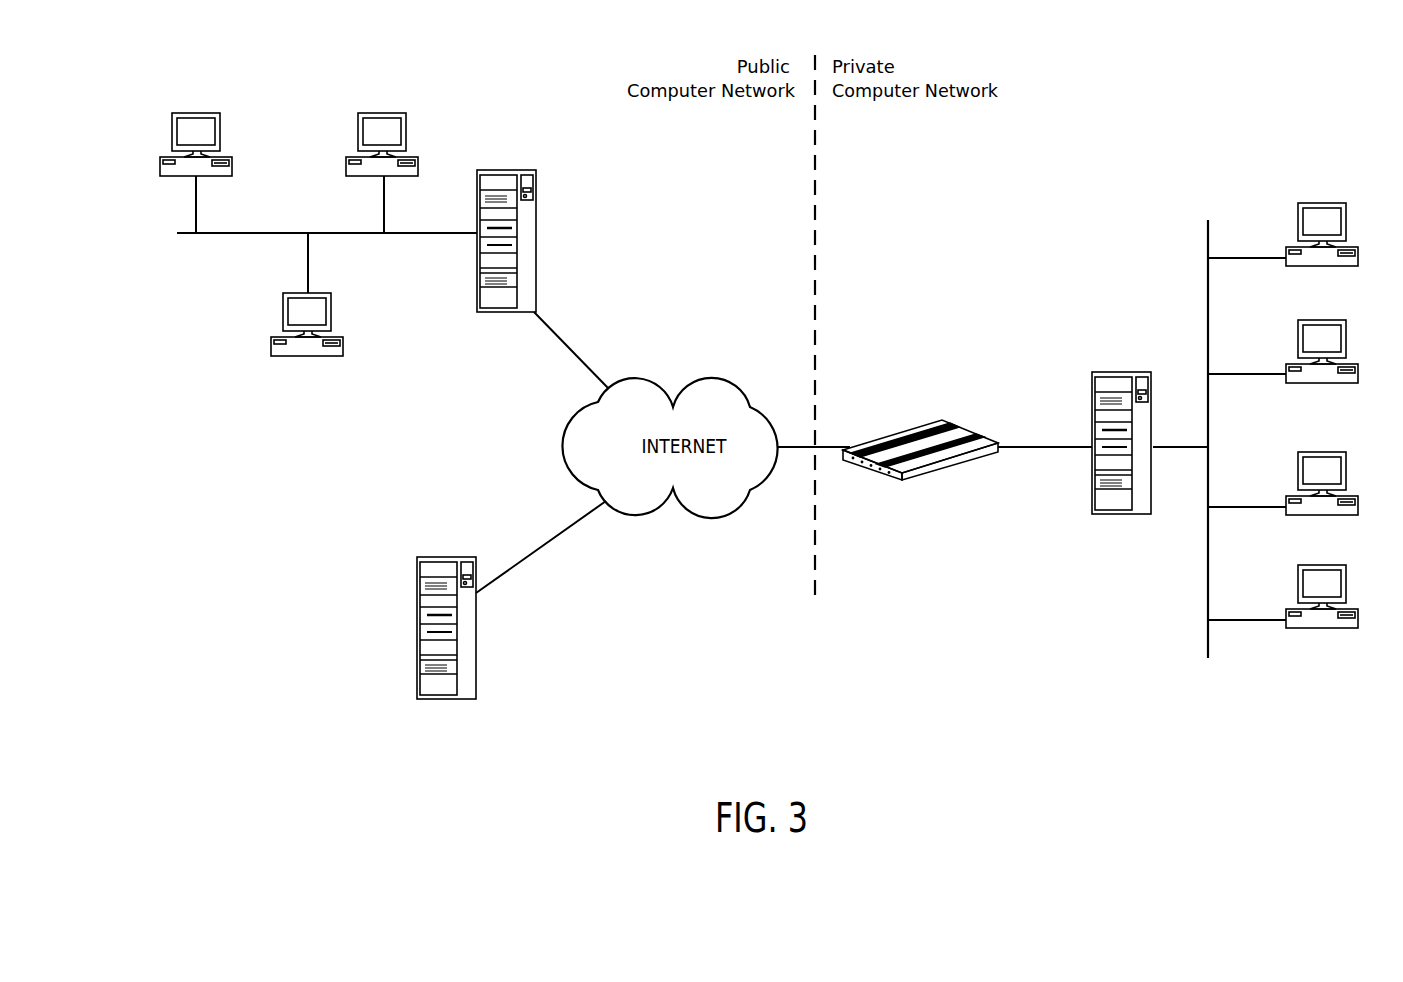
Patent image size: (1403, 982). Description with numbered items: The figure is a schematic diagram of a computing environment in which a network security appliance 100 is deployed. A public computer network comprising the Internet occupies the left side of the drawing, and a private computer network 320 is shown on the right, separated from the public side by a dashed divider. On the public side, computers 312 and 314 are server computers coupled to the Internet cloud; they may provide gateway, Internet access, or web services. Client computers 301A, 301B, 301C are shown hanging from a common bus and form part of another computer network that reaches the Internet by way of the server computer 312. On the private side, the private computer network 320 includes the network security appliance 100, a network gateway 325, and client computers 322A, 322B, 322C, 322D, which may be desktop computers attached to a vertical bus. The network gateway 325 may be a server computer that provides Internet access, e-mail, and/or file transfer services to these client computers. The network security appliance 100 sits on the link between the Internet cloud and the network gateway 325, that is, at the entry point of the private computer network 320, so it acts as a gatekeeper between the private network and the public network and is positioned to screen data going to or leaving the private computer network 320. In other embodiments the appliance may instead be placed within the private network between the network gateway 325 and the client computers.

The client computer 301A is at (196, 112).
The client computer 301B is at (378, 112).
The client computer 301C is at (297, 357).
The server computer 312 is at (499, 169).
The server computer 314 is at (440, 698).
The network security appliance 100 is at (963, 426).
The private computer network 320 is at (1001, 258).
The network gateway 325 is at (1105, 372).
The client computer 322A is at (1322, 204).
The client computer 322B is at (1335, 319).
The client computer 322C is at (1338, 451).
The client computer 322D is at (1330, 564).